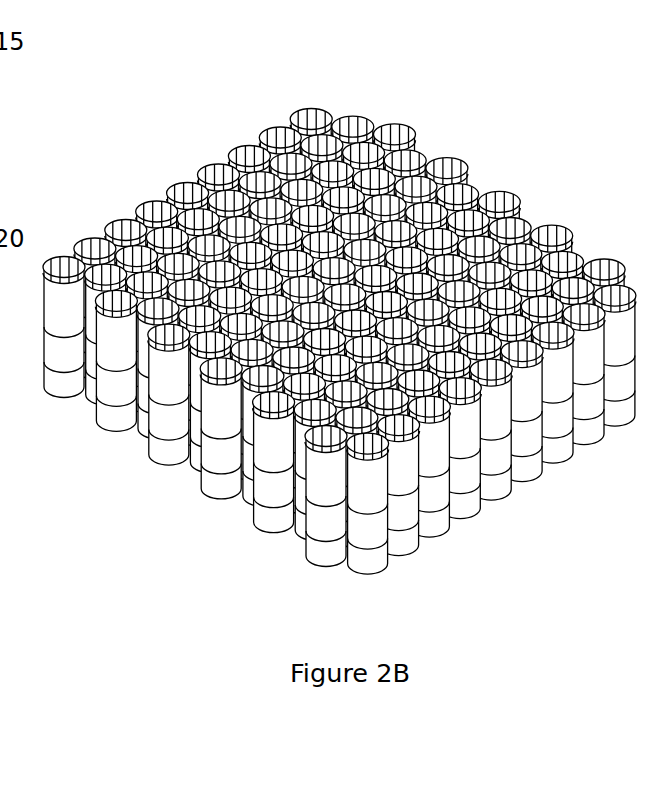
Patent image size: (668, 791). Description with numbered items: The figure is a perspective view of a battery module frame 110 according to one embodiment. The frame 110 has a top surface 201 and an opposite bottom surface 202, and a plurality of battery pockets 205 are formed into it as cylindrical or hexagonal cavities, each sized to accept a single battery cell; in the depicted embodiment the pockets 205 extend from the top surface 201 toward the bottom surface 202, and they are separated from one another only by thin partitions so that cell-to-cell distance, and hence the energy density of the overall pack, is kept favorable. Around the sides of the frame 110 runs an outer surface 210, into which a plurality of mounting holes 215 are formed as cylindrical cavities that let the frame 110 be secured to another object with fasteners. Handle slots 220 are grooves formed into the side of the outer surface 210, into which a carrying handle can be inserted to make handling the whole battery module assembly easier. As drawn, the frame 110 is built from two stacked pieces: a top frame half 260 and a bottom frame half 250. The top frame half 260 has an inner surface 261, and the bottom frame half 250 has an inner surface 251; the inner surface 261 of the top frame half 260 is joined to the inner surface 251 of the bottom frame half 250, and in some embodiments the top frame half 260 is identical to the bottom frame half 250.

The battery module frame 110 is at (327, 359).
The top surface 201 is at (467, 157).
The bottom surface 202 is at (476, 513).
The battery pockets 205 is at (312, 123).
The outer surface 210 is at (140, 472).
The mounting holes 215 is at (427, 440).
The handle slots 220 is at (587, 363).
The bottom frame half 250 is at (318, 520).
The inner surface 251 is at (529, 423).
The top frame half 260 is at (182, 182).
The inner surface 261 is at (537, 427).